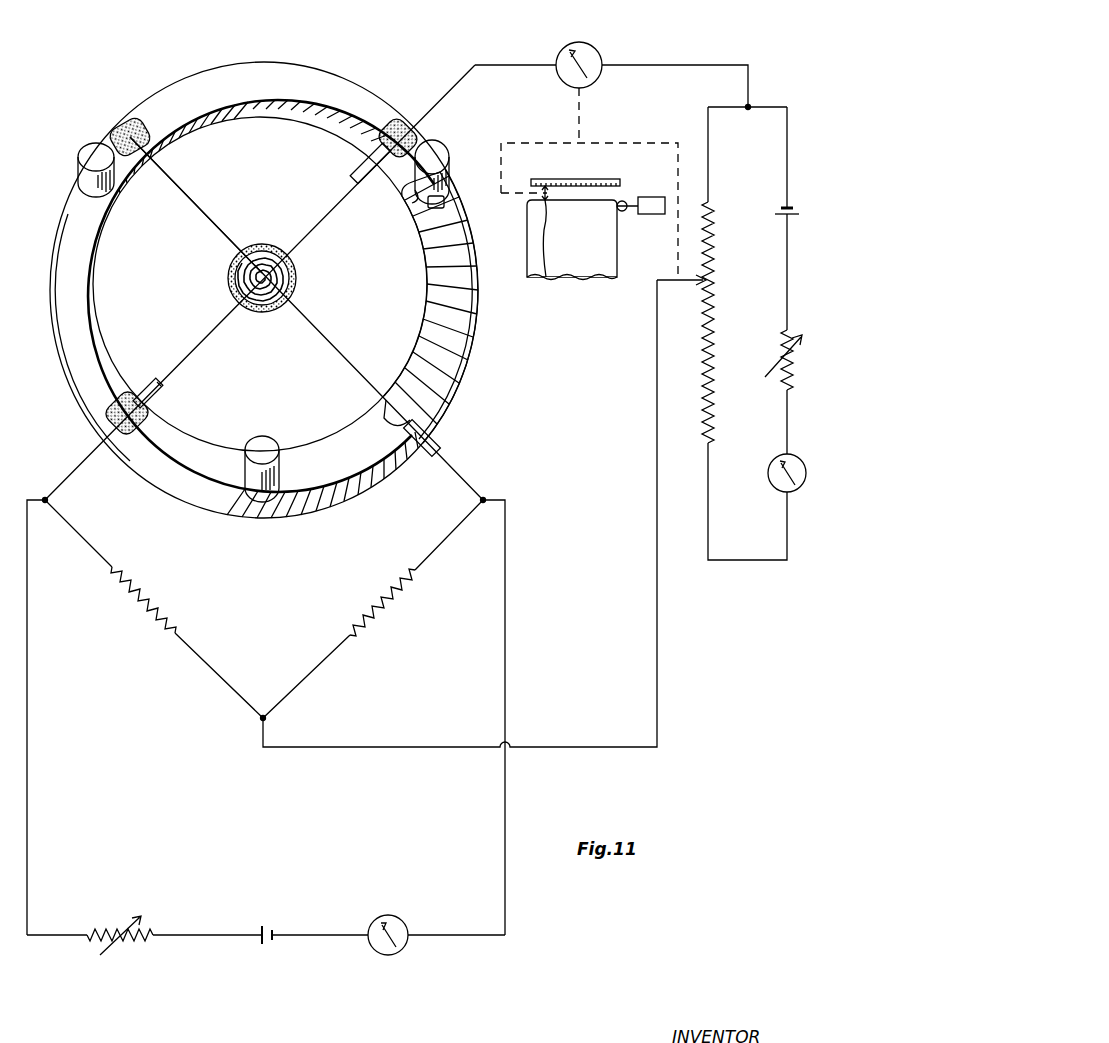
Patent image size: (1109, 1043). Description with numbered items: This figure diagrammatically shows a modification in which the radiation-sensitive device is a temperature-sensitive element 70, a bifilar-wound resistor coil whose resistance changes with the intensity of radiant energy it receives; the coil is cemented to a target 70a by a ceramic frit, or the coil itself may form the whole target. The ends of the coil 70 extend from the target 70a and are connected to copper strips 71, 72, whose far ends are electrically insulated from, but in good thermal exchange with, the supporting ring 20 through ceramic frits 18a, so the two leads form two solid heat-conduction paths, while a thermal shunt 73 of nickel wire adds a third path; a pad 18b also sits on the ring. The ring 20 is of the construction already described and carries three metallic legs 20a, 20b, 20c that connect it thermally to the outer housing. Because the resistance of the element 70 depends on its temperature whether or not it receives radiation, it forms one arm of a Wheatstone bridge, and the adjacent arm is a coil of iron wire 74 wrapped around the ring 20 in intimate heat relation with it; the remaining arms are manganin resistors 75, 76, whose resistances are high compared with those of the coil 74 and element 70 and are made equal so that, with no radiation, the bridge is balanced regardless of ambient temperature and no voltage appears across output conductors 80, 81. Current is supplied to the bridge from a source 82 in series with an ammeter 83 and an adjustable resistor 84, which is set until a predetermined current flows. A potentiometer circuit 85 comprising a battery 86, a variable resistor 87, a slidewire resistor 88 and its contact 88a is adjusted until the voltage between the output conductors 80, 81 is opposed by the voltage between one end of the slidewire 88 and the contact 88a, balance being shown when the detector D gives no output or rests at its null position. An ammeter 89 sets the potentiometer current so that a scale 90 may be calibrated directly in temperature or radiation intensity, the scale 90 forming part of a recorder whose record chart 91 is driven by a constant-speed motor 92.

The mounting ring 20 is at (300, 63).
The metallic leg 20a is at (263, 447).
The metallic leg 20b is at (438, 153).
The metallic leg 20c is at (88, 150).
The ceramic frit 18a is at (126, 121).
The contact pad 18b is at (395, 406).
The temperature-sensitive element 70 is at (276, 292).
The target 70a is at (296, 275).
The copper strip 71 is at (162, 394).
The copper strip 72 is at (370, 183).
The thermal shunt 73 is at (205, 222).
The coil of iron wire 74 is at (466, 335).
The resistor 75 is at (150, 605).
The resistor 76 is at (372, 628).
The output conductor 80 is at (678, 65).
The output conductor 81 is at (573, 747).
The source 82 is at (267, 950).
The ammeter 83 is at (397, 955).
The adjustable resistor 84 is at (145, 952).
The potentiometer circuit 85 is at (760, 433).
The battery 86 is at (776, 211).
The variable resistor 87 is at (780, 345).
The slidewire resistor 88 is at (713, 300).
The contact 88a is at (673, 285).
The ammeter 89 is at (773, 486).
The scale 90 is at (601, 180).
The record chart 91 is at (578, 276).
The constant-speed motor 92 is at (646, 216).
The detector D is at (590, 44).